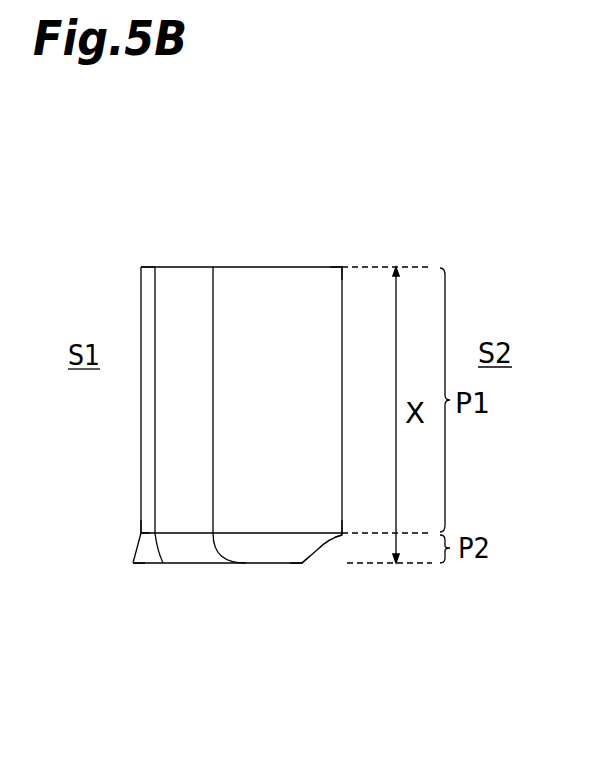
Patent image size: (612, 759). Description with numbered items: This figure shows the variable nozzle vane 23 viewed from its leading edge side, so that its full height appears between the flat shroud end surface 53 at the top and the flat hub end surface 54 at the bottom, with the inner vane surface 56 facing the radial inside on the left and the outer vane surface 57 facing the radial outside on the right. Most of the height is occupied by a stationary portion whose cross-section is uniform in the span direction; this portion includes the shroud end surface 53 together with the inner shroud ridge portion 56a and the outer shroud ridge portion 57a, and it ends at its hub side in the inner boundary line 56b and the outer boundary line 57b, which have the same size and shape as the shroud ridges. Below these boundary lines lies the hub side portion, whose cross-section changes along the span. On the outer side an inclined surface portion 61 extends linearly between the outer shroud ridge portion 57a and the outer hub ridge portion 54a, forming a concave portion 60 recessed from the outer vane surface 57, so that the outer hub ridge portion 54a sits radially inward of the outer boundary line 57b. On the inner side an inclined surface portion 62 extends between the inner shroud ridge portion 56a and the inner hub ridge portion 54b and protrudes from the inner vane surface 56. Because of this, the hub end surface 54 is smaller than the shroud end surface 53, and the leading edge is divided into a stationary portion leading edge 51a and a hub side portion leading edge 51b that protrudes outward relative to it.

The variable nozzle vane 23 is at (298, 190).
The stationary portion leading edge 51a is at (167, 350).
The hub side portion leading edge 51b is at (248, 563).
The shroud end surface 53 is at (275, 267).
The hub end surface 54 is at (193, 566).
The outer hub ridge portion 54a is at (302, 565).
The inner hub ridge portion 54b is at (133, 563).
The inner vane surface 56 is at (140, 440).
The inner shroud ridge portion 56a is at (141, 267).
The inner boundary line 56b is at (141, 533).
The outer vane surface 57 is at (312, 350).
The outer shroud ridge portion 57a is at (342, 267).
The outer boundary line 57b is at (347, 540).
The concave portion 60 is at (313, 566).
The inclined surface portion 61 is at (321, 553).
The inclined surface portion 62 is at (137, 548).